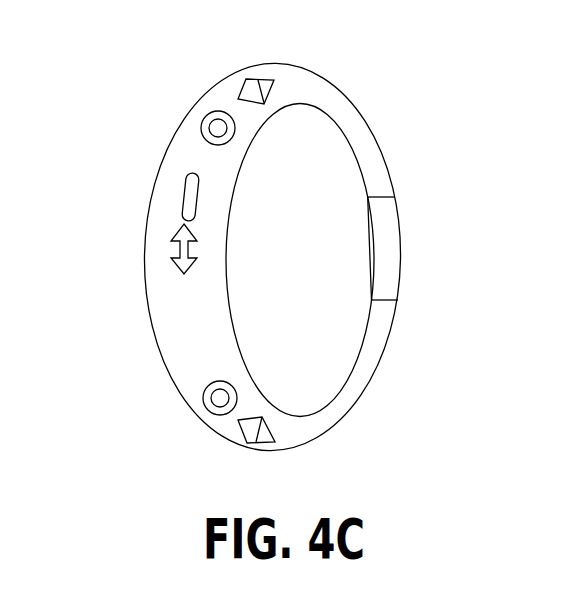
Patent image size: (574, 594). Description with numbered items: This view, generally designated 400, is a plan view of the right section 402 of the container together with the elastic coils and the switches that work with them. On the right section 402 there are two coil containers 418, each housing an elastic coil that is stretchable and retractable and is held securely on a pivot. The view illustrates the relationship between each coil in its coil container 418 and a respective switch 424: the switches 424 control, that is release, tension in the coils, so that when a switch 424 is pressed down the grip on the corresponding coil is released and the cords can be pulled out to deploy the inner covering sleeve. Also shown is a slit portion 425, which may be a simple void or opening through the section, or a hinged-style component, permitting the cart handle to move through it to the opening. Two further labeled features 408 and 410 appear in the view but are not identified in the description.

The plan view of right section components 400 is at (203, 53).
The right section 402 is at (201, 421).
The scroll indicator 408 is at (173, 247).
The slot / touch input 410 is at (184, 200).
The coil container 418 is at (202, 134).
The switch 424 is at (258, 80).
The slit portion 425 is at (400, 239).